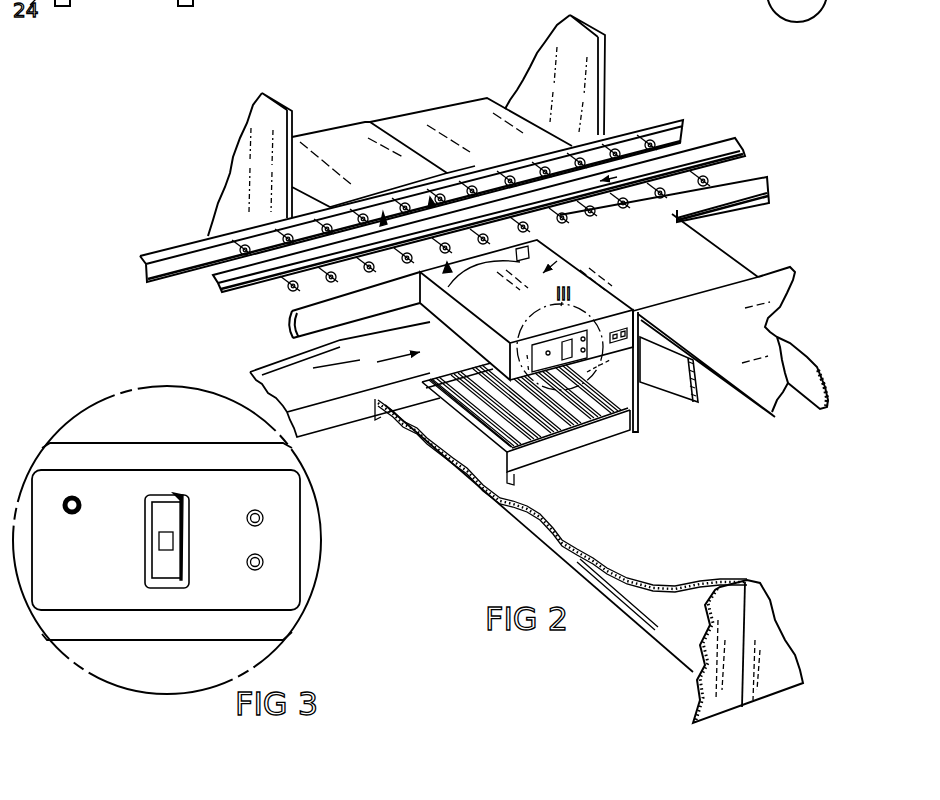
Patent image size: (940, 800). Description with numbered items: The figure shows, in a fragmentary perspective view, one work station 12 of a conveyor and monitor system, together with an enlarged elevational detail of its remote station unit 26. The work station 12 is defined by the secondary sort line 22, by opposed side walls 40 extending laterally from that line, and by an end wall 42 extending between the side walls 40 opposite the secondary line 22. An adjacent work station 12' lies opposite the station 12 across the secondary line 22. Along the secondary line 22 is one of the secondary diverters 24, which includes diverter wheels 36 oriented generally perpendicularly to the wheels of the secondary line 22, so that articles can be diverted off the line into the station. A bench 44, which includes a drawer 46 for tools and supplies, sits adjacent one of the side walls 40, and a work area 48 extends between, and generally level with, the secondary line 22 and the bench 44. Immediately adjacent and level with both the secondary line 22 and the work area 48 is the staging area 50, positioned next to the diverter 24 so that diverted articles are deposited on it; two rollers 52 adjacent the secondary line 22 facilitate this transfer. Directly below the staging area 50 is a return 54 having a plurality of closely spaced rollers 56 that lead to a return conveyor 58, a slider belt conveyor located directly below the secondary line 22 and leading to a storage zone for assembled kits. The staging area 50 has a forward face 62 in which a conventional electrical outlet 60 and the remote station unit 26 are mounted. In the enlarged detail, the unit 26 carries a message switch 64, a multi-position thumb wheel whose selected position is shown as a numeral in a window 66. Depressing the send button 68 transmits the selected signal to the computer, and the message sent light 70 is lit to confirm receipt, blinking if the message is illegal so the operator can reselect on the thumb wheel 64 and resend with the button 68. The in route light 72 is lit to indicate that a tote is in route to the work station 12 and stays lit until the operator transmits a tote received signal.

In FIG. 2, the adjacent work station 12' is at (432, 126).
In FIG. 2, the secondary sort line 22 is at (178, 243).
In FIG. 2, the secondary diverter 24 is at (317, 273).
In FIG. 2, the diverter wheels 36 is at (425, 196).
In FIG. 2, the rollers 52 is at (521, 260).
In FIG. 2, the work area 48 is at (652, 270).
In FIG. 2, the staging area 50 is at (512, 316).
In FIG. 3, the staging area 50 is at (183, 643).
In FIG. 2, the remote station unit 26 is at (553, 359).
In FIG. 3, the remote station unit 26 is at (143, 467).
In FIG. 2, the electrical outlet 60 is at (628, 333).
In FIG. 2, the forward face 62 is at (636, 434).
In FIG. 3, the forward face 62 is at (125, 625).
In FIG. 2, the return 54 is at (548, 452).
In FIG. 2, the return conveyor 58 is at (337, 386).
In FIG. 2, the rollers 56 is at (440, 433).
In FIG. 2, the work station 12 is at (539, 538).
In FIG. 2, the drawer 46 is at (678, 373).
In FIG. 2, the bench 44 is at (751, 404).
In FIG. 2, the side walls 40 is at (802, 380).
In FIG. 2, the end wall 42 is at (763, 630).
In FIG. 3, the in route light 72 is at (77, 500).
In FIG. 3, the message switch 64 is at (157, 563).
In FIG. 3, the window 66 is at (160, 540).
In FIG. 3, the message sent light 70 is at (247, 517).
In FIG. 3, the send button 68 is at (247, 561).